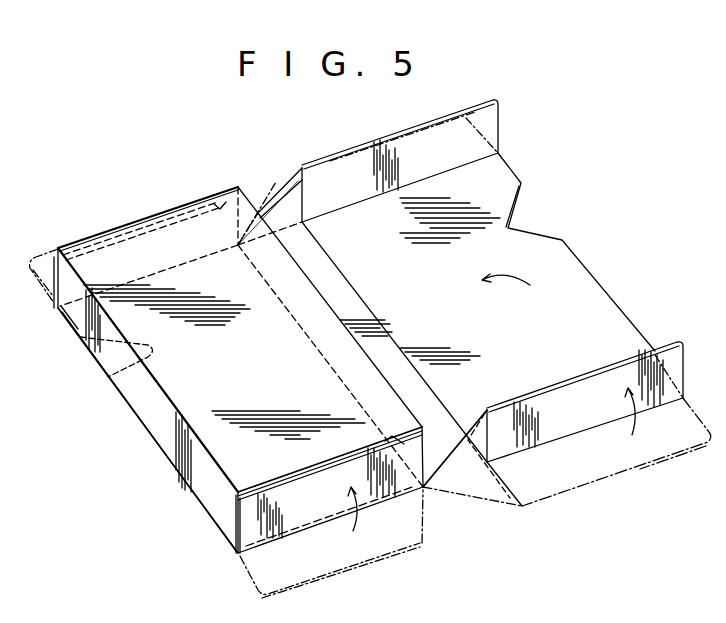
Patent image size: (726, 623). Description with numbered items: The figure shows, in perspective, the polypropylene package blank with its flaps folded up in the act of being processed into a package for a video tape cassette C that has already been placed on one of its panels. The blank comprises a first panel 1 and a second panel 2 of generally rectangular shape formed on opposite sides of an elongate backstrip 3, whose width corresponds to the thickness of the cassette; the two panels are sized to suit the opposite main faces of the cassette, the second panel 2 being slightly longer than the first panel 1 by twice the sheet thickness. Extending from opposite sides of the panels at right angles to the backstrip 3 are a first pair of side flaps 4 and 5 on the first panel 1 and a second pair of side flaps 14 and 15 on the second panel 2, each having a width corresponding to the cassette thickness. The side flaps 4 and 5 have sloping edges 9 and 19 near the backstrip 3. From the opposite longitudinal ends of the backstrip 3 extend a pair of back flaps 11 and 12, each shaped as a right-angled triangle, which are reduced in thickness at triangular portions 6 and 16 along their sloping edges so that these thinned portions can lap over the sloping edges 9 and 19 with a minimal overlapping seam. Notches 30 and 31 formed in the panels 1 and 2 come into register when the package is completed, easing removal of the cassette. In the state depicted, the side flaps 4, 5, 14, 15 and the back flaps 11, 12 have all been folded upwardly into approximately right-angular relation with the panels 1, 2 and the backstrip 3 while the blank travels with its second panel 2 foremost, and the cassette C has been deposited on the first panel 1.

The first panel 1 is at (162, 462).
The second panel 2 is at (590, 300).
The backstrip 3 is at (336, 290).
The side flap 4 is at (35, 260).
The side flap 5 is at (297, 488).
The triangular portion 6 is at (262, 205).
The sloping edge 9 is at (223, 197).
The back flap 11 is at (294, 194).
The back flap 12 is at (458, 462).
The side flap 14 is at (489, 125).
The side flap 15 is at (577, 388).
The triangular portion 16 is at (478, 428).
The sloping edge 19 is at (407, 450).
The notch 30 is at (110, 378).
The notch 31 is at (515, 212).
The video tape cassette C is at (147, 404).